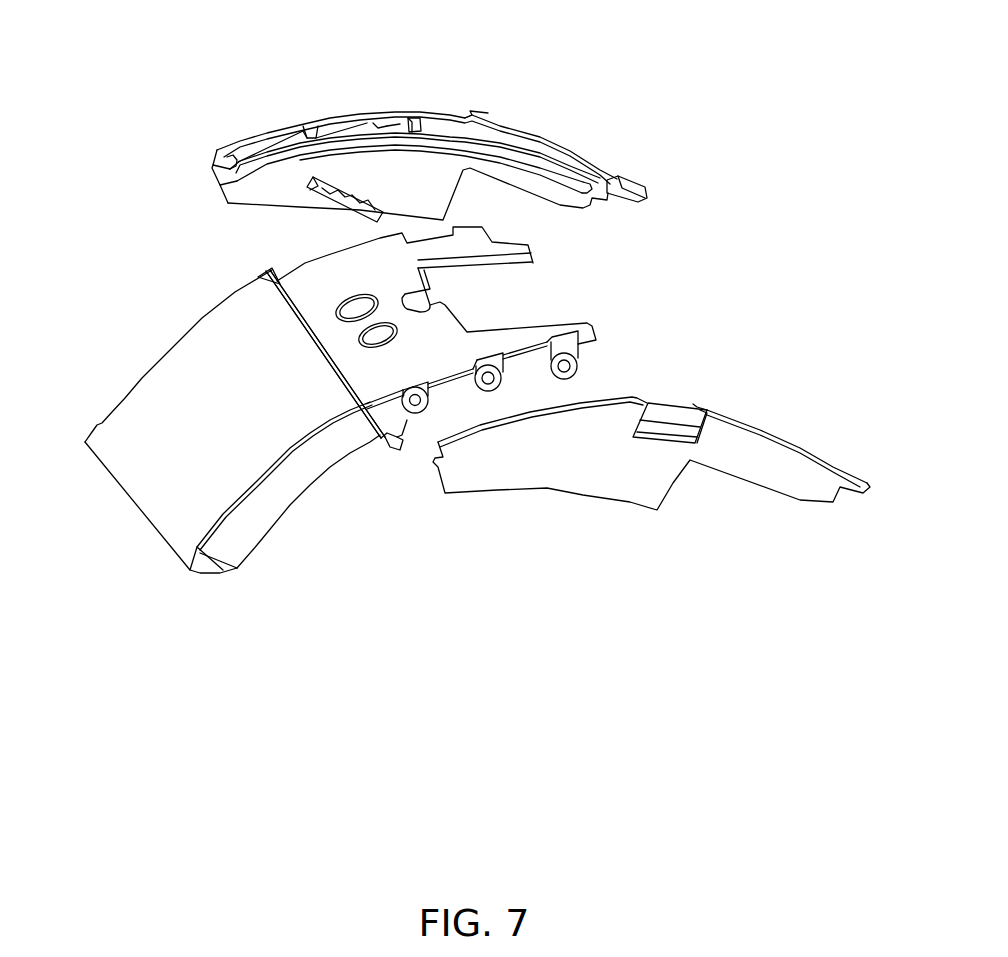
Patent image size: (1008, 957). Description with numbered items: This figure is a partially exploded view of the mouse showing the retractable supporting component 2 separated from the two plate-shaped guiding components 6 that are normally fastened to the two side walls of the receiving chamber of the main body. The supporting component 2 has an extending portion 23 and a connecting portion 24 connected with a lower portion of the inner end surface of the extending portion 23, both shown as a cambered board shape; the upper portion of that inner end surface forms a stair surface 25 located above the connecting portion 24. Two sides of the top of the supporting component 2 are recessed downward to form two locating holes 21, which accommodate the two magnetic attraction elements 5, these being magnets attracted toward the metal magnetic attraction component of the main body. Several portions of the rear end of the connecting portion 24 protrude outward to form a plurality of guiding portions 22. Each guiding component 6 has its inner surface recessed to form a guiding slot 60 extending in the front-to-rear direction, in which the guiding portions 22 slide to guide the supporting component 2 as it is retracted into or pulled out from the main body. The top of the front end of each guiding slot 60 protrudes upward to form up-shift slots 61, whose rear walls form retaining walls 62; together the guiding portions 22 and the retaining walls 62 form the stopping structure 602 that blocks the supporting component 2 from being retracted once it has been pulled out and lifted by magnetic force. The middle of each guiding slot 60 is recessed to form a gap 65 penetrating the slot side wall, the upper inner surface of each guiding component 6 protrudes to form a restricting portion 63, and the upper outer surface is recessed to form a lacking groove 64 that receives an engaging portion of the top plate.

The supporting component 2 is at (235, 421).
The magnetic attraction element 5 is at (467, 282).
The guiding component 6 is at (429, 110).
The locating hole 21 is at (275, 292).
The guiding portion 22 is at (525, 411).
The extending portion 23 is at (158, 356).
The connecting portion 24 is at (431, 338).
The stair surface 25 is at (285, 248).
The guiding slot 60 is at (558, 128).
The up-shift slot 61 is at (286, 91).
The retaining wall 62 is at (336, 97).
The restricting portion 63 is at (455, 61).
The lacking groove 64 is at (682, 482).
The gap 65 is at (415, 188).
The stopping structure 602 is at (417, 273).